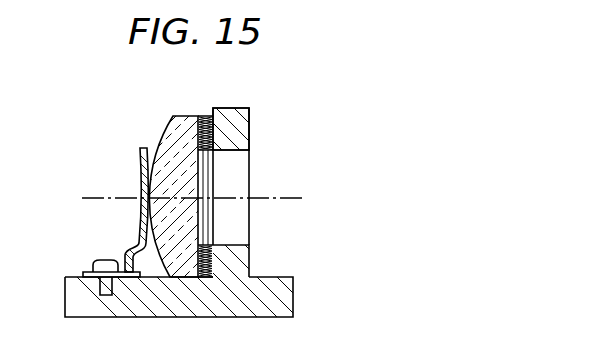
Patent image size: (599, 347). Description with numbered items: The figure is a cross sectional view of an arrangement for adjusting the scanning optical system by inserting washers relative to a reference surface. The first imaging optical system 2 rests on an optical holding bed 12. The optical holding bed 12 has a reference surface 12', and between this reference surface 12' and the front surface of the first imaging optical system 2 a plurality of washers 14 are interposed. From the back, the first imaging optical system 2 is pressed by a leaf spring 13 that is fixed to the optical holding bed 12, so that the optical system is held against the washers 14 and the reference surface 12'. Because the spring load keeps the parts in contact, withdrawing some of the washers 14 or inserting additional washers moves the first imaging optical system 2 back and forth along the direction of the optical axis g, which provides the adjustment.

The first imaging optical system 2 is at (172, 124).
The optical holding bed 12 is at (282, 210).
The reference surface 12' is at (231, 113).
The leaf spring 13 is at (139, 157).
The washers 14 is at (205, 114).
The optical axis g is at (283, 197).